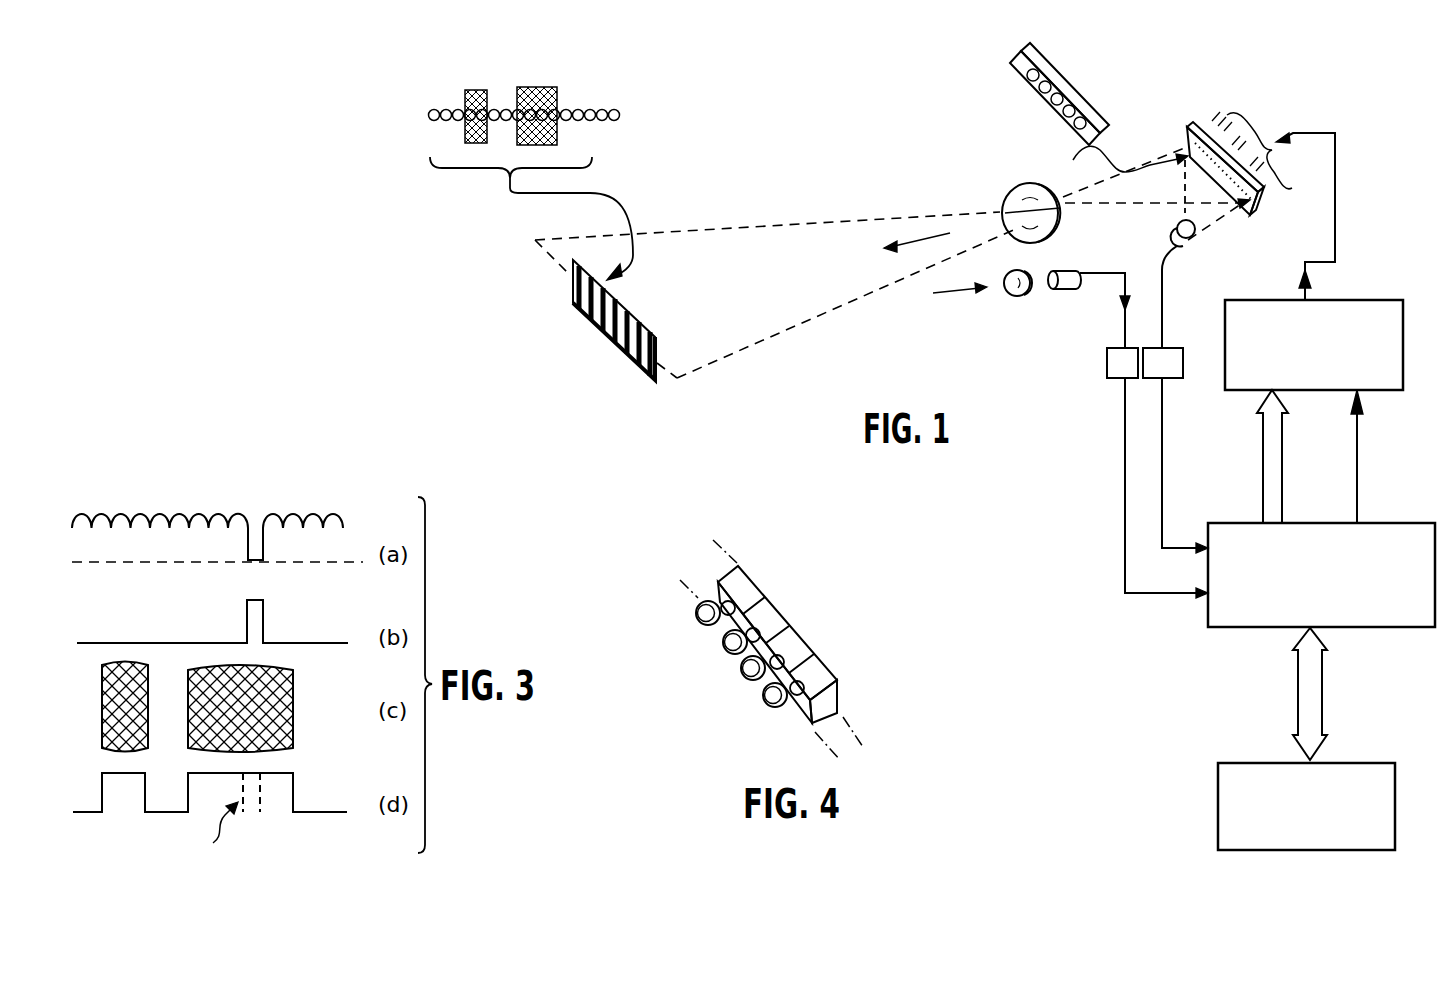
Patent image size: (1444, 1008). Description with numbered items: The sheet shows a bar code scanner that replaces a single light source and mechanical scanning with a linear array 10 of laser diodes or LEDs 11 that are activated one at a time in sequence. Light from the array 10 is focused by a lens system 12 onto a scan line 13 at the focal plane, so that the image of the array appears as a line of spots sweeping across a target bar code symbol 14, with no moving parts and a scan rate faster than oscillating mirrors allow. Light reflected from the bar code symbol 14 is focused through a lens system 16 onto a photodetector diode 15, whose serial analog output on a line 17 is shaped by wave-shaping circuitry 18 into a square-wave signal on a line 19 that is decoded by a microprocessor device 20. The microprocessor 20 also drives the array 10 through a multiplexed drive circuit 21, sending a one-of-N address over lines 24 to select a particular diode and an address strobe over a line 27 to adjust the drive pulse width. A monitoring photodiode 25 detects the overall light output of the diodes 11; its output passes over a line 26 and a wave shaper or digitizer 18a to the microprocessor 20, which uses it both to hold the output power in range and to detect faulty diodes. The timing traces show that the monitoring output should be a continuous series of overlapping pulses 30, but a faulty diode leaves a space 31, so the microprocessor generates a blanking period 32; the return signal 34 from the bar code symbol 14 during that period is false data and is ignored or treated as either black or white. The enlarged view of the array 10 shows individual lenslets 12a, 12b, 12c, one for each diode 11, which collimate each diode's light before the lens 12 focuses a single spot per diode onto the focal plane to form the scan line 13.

In FIG. 1, the linear array 10 is at (1186, 125).
In FIG. 4, the linear array 10 is at (757, 583).
In FIG. 1, the laser diodes or LEDs 11 is at (1027, 82).
In FIG. 4, the laser diodes or LEDs 11 is at (716, 586).
In FIG. 1, the lens system 12 is at (1018, 190).
In FIG. 4, the lenslet 12a is at (697, 618).
In FIG. 4, the lenslet 12b is at (724, 652).
In FIG. 4, the lenslet 12c is at (745, 680).
In FIG. 1, the scan line 13 is at (582, 112).
In FIG. 1, the bar code symbol 14 is at (545, 78).
In FIG. 3, the bar code symbol 14 is at (307, 727).
In FIG. 1, the photodetector diode 15 is at (1025, 296).
In FIG. 1, the lens system 16 is at (1012, 297).
In FIG. 1, the line 17 is at (1122, 332).
In FIG. 1, the wave-shaping circuitry 18 is at (1122, 363).
In FIG. 1, the wave shaper or digitizer 18a is at (1163, 363).
In FIG. 1, the line 19 is at (1172, 570).
In FIG. 1, the microprocessor device 20 is at (1207, 620).
In FIG. 1, the multiplexed drive circuit 21 is at (1268, 298).
In FIG. 1, the lines 24 is at (1262, 465).
In FIG. 1, the monitoring photodiode 25 is at (1168, 230).
In FIG. 1, the line 26 is at (1165, 314).
In FIG. 1, the line 27 is at (1358, 470).
In FIG. 3, the pulses 30 is at (200, 512).
In FIG. 3, the space 31 is at (258, 515).
In FIG. 3, the blanking period 32 is at (265, 616).
In FIG. 3, the digitized signal 34 is at (295, 792).